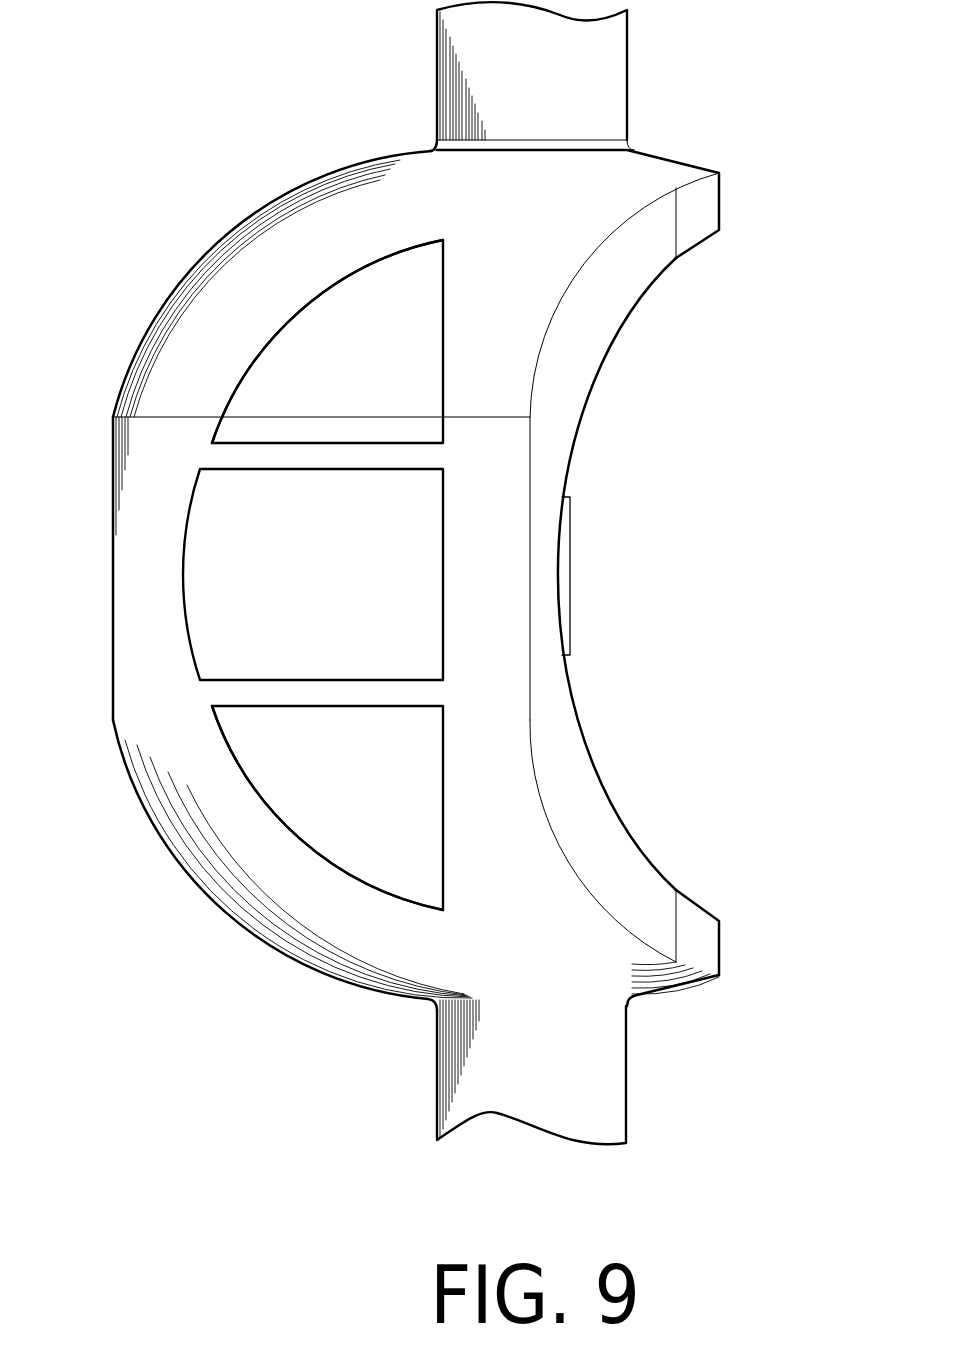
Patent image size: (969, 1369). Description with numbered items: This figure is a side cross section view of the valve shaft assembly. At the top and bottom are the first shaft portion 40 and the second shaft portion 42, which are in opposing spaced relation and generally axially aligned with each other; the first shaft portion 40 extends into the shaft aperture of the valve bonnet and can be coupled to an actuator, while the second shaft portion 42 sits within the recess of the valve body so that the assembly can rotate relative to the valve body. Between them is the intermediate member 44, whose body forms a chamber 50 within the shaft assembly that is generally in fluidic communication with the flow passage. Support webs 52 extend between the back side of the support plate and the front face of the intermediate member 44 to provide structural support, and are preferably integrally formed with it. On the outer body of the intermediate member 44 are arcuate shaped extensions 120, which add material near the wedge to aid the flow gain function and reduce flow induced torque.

The first shaft portion 40 is at (627, 88).
The second shaft portion 42 is at (613, 1080).
The intermediate member 44 is at (343, 197).
The chamber 50 is at (378, 391).
The support webs 52 is at (265, 458).
The arcuate shaped extensions 120 is at (635, 265).